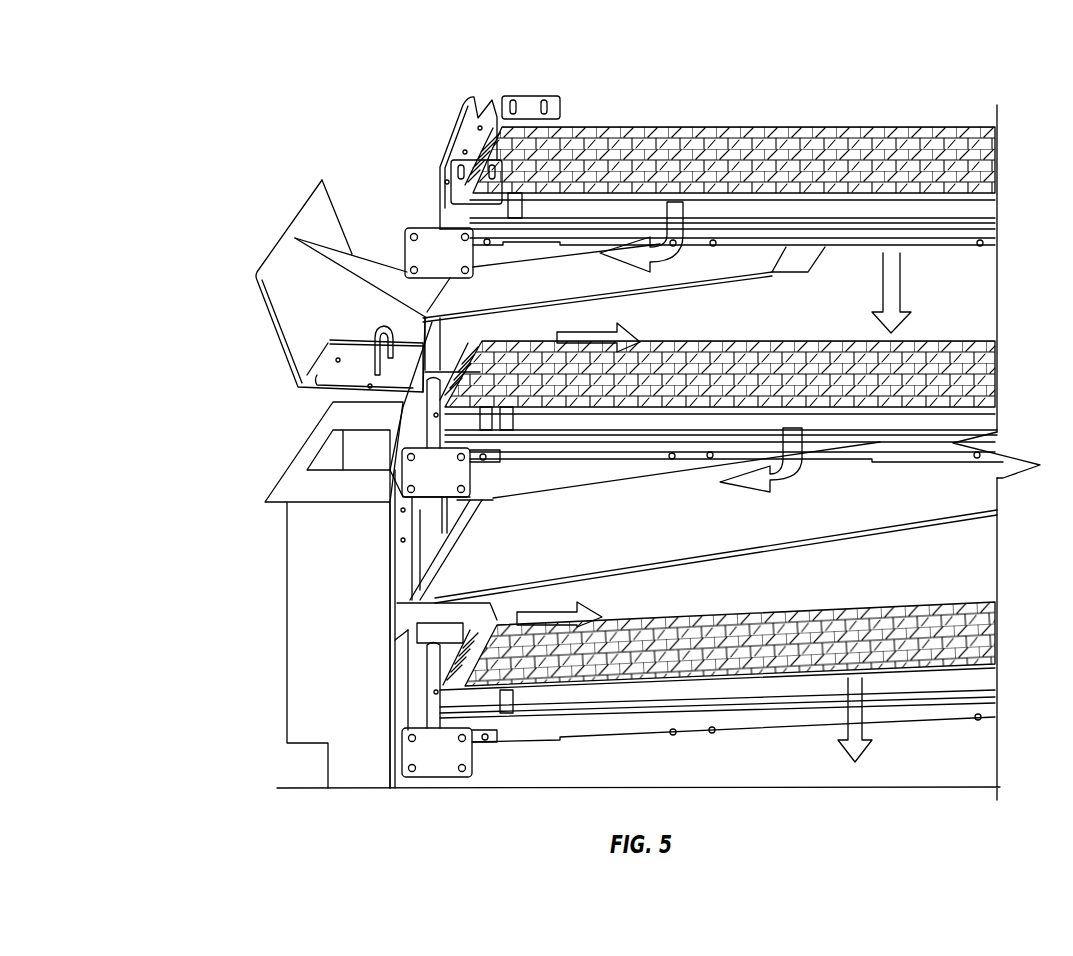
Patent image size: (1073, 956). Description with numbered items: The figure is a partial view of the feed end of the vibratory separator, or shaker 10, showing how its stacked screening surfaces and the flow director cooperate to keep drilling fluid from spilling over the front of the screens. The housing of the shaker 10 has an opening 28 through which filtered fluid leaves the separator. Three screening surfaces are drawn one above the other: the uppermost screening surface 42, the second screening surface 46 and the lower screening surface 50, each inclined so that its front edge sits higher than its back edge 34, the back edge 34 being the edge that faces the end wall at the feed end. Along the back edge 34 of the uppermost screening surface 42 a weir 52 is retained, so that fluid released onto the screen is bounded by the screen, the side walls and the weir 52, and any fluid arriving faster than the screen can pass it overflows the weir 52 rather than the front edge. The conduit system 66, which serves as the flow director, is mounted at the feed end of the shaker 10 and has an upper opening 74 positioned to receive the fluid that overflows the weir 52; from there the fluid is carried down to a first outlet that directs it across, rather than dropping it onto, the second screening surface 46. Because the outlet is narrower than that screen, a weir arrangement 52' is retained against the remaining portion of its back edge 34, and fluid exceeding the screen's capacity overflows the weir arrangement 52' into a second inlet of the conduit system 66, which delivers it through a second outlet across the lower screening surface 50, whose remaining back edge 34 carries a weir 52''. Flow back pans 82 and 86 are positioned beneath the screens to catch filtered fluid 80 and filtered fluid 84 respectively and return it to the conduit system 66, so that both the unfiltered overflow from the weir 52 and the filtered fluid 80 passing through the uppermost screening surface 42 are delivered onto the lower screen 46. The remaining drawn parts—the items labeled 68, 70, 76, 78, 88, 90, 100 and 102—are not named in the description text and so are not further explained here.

The shaker 10 is at (266, 78).
The opening 28 is at (975, 762).
The back edge 34 is at (492, 352).
The uppermost screening surface 42 is at (805, 128).
The second screening surface 46 is at (796, 342).
The lowermost screening surface 50 is at (798, 606).
The weir 52 is at (520, 144).
The second weir arrangement 52' is at (525, 448).
The weir 52'' is at (501, 713).
The conduit system 66 is at (242, 234).
The hopper back wall 68 is at (268, 290).
The handle 70 is at (350, 370).
The upper opening 74 is at (370, 242).
The inclined deflector plate 76 is at (340, 275).
The downward flow of fines 78 is at (905, 305).
The filtered fluid 80 is at (720, 285).
The flow back pan 82 is at (680, 250).
The filtered fluid 84 is at (790, 482).
The flow back pan 86 is at (905, 510).
The collection bin 88 is at (300, 655).
The side bracket 90 is at (430, 517).
The support plate 100 is at (460, 500).
The diagonal brace 102 is at (420, 545).